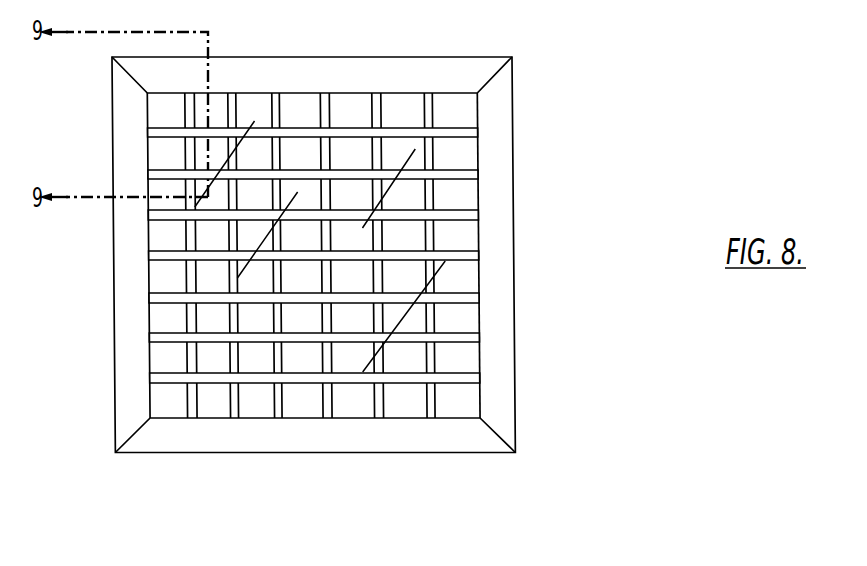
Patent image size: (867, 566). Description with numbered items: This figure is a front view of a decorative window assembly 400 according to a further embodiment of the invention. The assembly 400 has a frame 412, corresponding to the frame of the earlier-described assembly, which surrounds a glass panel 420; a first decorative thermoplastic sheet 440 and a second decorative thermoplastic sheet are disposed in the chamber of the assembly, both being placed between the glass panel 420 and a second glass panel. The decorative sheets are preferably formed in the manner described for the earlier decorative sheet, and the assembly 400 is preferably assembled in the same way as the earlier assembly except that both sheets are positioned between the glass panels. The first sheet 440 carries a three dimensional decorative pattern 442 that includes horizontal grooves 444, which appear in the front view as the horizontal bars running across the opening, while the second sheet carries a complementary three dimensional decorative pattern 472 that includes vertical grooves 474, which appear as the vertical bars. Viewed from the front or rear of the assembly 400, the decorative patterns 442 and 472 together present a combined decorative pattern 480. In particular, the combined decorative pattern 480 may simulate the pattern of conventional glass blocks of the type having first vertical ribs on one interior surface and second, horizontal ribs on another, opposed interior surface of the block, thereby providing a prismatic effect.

The decorative window assembly 400 is at (586, 244).
The frame 412 is at (505, 295).
The glass panel 420 is at (460, 413).
The first decorative thermoplastic sheet 440 is at (403, 414).
The decorative pattern 442 is at (297, 386).
The horizontal grooves 444 is at (172, 297).
The decorative pattern 472 is at (336, 398).
The vertical grooves 474 is at (378, 205).
The combined decorative pattern 480 is at (464, 355).